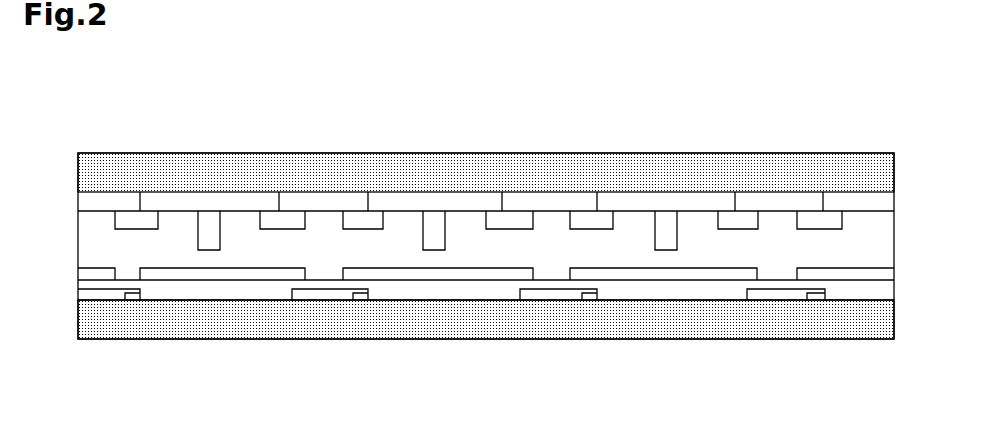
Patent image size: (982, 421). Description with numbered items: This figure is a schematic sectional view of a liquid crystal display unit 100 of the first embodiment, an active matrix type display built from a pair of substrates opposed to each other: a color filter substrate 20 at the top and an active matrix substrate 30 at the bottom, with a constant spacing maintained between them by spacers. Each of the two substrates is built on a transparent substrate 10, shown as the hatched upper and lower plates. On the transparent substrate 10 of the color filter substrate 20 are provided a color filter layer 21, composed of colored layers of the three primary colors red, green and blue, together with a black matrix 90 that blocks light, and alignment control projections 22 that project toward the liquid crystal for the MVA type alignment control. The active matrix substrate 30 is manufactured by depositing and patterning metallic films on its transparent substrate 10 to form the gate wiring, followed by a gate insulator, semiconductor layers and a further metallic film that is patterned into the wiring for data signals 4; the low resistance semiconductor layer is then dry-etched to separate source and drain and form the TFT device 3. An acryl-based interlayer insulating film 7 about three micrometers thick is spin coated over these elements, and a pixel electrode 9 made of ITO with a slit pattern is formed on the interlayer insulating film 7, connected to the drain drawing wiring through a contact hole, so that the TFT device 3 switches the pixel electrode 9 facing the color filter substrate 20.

The liquid crystal display unit 100 is at (128, 105).
The transparent substrate 10 is at (172, 172).
The color filter substrate 20 is at (72, 150).
The color filter layer 21 is at (240, 198).
The alignment control projection 22 is at (663, 228).
The black matrix 90 is at (768, 200).
The active matrix substrate 30 is at (72, 272).
The pixel electrode 9 is at (453, 270).
The interlayer insulating film 7 is at (699, 287).
The wiring for data signals 4 is at (333, 295).
The TFT device 3 is at (590, 295).